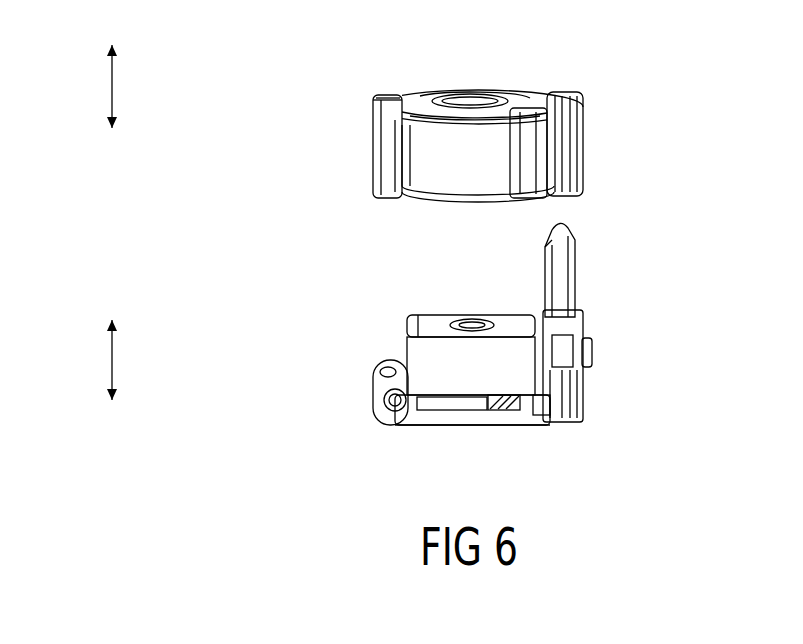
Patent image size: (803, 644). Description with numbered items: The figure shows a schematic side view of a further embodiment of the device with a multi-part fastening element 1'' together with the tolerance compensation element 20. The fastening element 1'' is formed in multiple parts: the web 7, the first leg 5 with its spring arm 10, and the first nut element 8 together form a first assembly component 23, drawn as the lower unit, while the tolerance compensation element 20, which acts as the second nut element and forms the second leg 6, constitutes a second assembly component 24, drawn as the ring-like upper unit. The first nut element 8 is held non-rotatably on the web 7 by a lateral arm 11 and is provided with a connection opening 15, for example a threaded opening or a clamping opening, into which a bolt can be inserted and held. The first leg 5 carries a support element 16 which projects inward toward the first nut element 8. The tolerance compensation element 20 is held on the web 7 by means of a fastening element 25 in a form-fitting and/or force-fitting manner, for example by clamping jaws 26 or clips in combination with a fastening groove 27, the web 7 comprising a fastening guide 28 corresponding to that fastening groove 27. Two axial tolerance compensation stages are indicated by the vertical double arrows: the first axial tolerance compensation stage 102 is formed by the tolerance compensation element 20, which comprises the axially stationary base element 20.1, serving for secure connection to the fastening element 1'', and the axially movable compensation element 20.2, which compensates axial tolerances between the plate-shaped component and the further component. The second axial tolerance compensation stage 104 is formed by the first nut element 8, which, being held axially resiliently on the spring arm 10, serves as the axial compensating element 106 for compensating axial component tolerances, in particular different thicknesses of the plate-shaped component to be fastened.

The fastening element 1'' is at (402, 60).
The first axial tolerance compensation stage 102 is at (87, 86).
The second axial tolerance compensation stage 104 is at (87, 360).
The second leg 6 is at (607, 92).
The fastening element 25 is at (607, 108).
The fastening groove 27 is at (563, 92).
The compensation element 20.2 is at (512, 90).
The tolerance compensation element 20 is at (458, 165).
The base element 20.1 is at (470, 165).
The clamping jaws 26 is at (374, 160).
The second assembly component 24 is at (317, 153).
The connection opening 15 is at (445, 90).
The compensating element 106 is at (399, 354).
The first nut element 8 is at (425, 352).
The first leg 5 is at (443, 418).
The support element 16 is at (510, 410).
The spring arm 10 is at (375, 378).
The lateral arm 11 is at (541, 347).
The fastening guide 28 is at (558, 258).
The web 7 is at (575, 295).
The first assembly component 23 is at (358, 432).